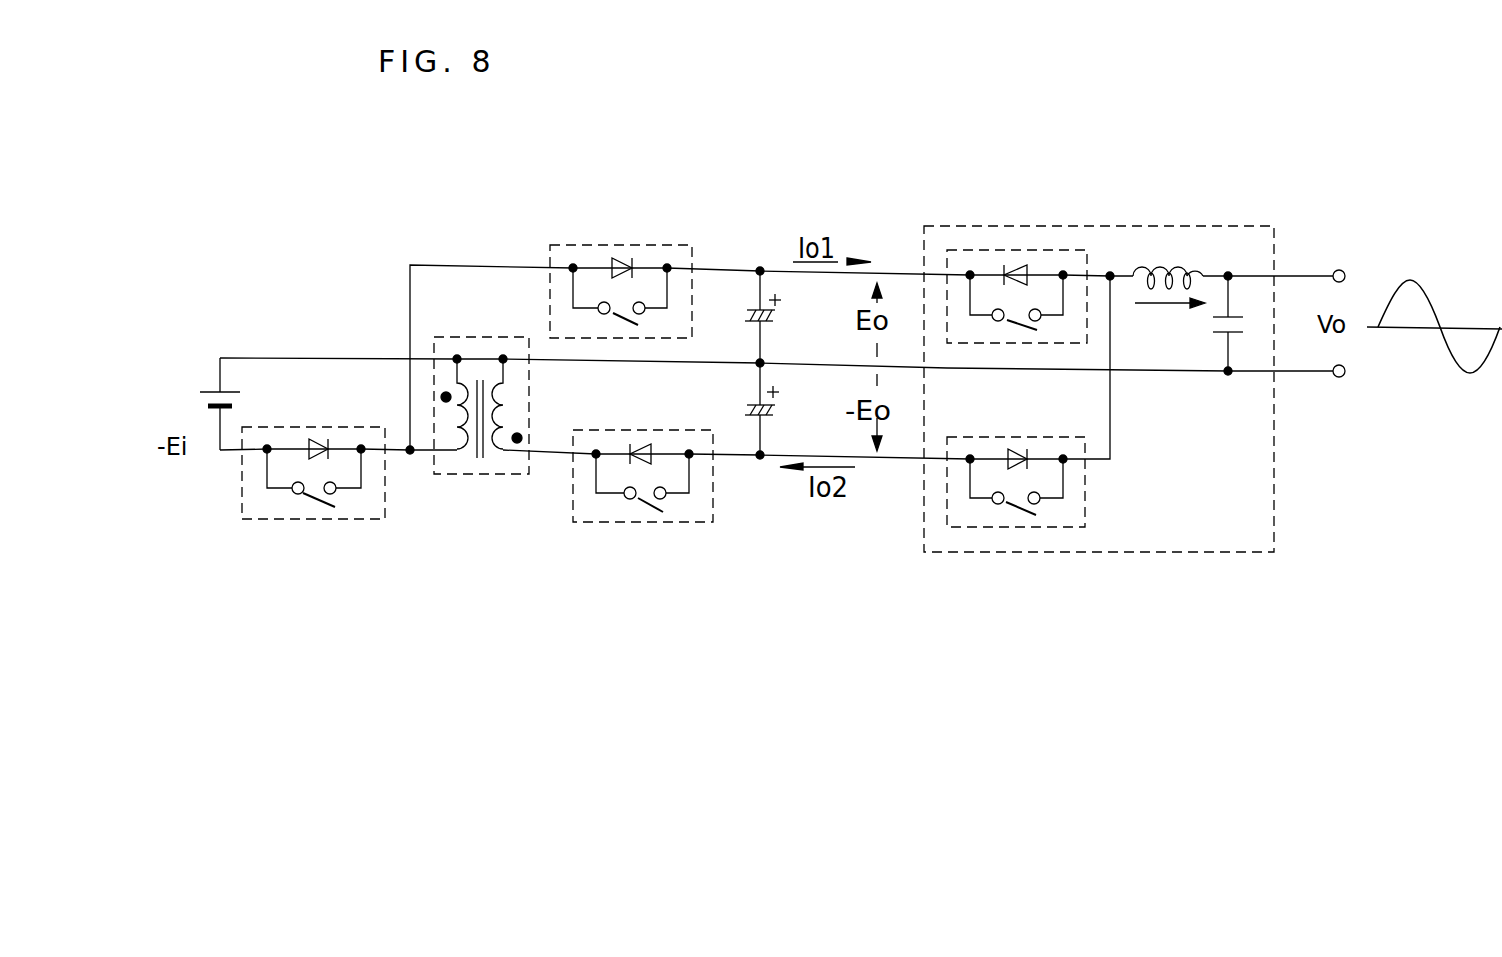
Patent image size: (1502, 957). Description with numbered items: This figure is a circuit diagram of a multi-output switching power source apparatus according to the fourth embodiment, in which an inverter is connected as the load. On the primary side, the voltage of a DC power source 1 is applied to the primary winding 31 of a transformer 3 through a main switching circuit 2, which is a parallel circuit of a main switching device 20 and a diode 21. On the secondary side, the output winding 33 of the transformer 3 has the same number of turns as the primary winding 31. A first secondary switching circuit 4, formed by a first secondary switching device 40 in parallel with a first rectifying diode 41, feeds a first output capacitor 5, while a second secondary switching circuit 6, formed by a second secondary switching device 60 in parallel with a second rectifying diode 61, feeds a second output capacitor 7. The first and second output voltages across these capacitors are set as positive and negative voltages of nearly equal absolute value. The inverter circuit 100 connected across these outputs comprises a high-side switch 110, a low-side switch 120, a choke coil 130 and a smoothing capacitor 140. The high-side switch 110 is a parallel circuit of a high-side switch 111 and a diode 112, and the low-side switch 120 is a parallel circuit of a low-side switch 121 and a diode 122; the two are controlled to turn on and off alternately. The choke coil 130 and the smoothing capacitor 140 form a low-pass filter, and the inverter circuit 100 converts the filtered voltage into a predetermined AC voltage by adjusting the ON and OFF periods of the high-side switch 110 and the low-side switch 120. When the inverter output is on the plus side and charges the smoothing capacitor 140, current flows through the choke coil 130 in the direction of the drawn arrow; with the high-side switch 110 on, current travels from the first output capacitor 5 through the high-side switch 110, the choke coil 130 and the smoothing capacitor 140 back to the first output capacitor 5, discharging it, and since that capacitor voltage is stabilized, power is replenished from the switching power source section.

The DC power source 1 is at (210, 391).
The main switching circuit 2 is at (317, 481).
The main switching device 20 is at (312, 506).
The diode 21 is at (322, 433).
The transformer 3 is at (459, 439).
The primary winding 31 is at (452, 415).
The first secondary winding 33 is at (512, 413).
The first secondary switching circuit 4 is at (628, 292).
The first secondary switching device 40 is at (615, 318).
The first rectifying diode 41 is at (622, 256).
The first output capacitor 5 is at (778, 318).
The second secondary switching circuit 6 is at (643, 472).
The second secondary switching device 60 is at (640, 509).
The second rectifying diode 61 is at (640, 443).
The second output capacitor 7 is at (778, 410).
The inverter circuit 100 is at (1144, 392).
The high-side switch 110 is at (1025, 295).
The high-side switch 111 is at (1017, 328).
The diode 112 is at (1018, 262).
The low-side switch 120 is at (1059, 496).
The low-side switch 121 is at (1012, 512).
The diode 122 is at (1018, 447).
The choke coil 130 is at (1172, 258).
The smoothing capacitor 140 is at (1213, 322).